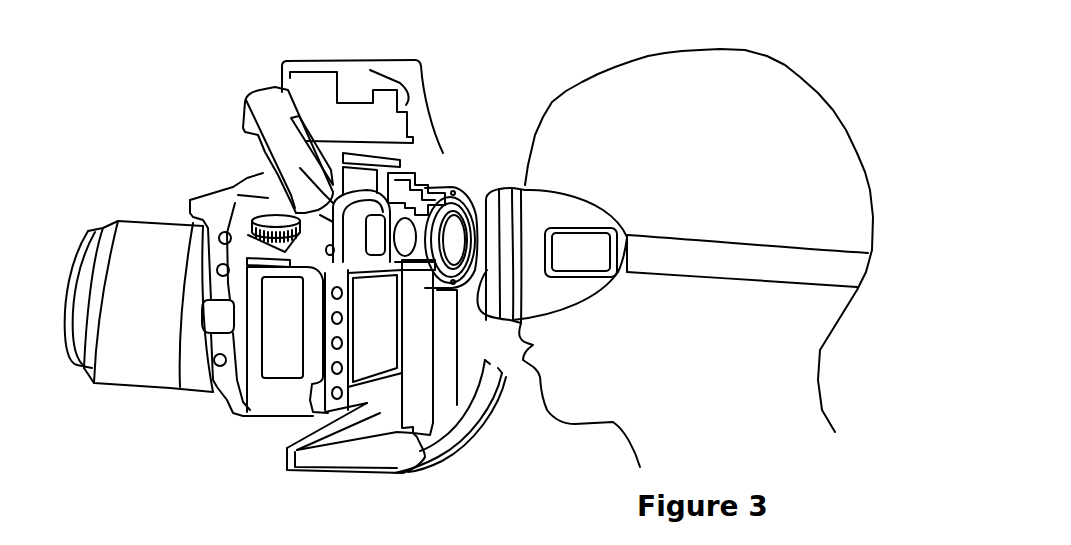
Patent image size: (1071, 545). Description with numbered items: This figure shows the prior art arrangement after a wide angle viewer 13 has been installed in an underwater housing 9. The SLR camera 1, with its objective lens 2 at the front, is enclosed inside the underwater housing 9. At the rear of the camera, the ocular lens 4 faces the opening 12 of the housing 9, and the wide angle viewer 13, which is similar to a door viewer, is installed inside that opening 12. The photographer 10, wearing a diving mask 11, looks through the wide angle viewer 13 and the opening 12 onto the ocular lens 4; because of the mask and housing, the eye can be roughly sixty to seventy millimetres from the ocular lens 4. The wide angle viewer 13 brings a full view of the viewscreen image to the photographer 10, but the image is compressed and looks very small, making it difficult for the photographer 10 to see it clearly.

The SLR camera 1 is at (238, 212).
The objective lens 2 is at (150, 353).
The ocular lens 4 is at (413, 180).
The underwater housing 9 is at (403, 100).
The photographer 10 is at (756, 85).
The diving mask 11 is at (548, 223).
The opening 12 is at (413, 200).
The wide angle viewer 13 is at (460, 200).